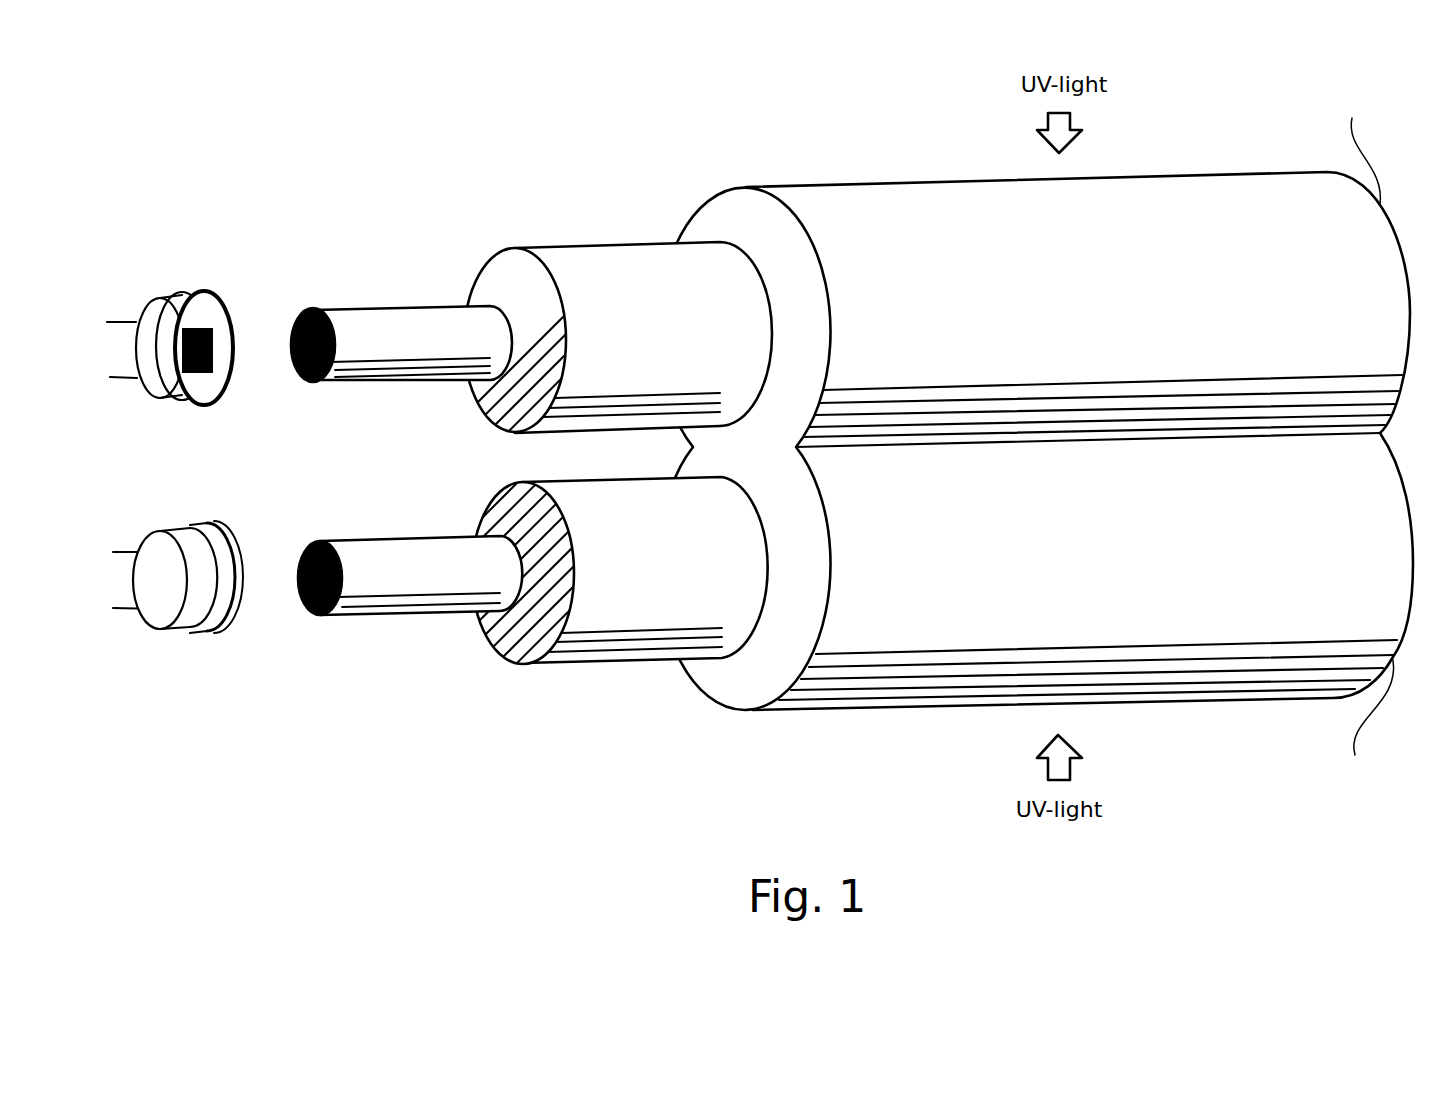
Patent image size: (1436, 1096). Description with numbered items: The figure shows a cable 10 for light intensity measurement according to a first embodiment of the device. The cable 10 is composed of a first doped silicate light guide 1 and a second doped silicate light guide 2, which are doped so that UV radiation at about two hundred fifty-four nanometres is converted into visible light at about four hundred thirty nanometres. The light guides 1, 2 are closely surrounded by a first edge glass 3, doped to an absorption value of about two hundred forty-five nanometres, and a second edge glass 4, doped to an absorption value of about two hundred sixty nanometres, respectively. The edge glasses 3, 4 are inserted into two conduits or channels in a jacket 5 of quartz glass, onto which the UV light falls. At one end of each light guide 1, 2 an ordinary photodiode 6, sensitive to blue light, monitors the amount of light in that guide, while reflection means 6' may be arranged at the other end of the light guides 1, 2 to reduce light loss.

The first doped silicate light guide 1 is at (390, 323).
The second doped silicate light guide 2 is at (387, 585).
The first edge glass 3 is at (605, 272).
The second edge glass 4 is at (632, 605).
The jacket 5 is at (871, 230).
The photodiode 6 is at (175, 473).
The reflection means 6' is at (1368, 437).
The cable 10 is at (852, 523).